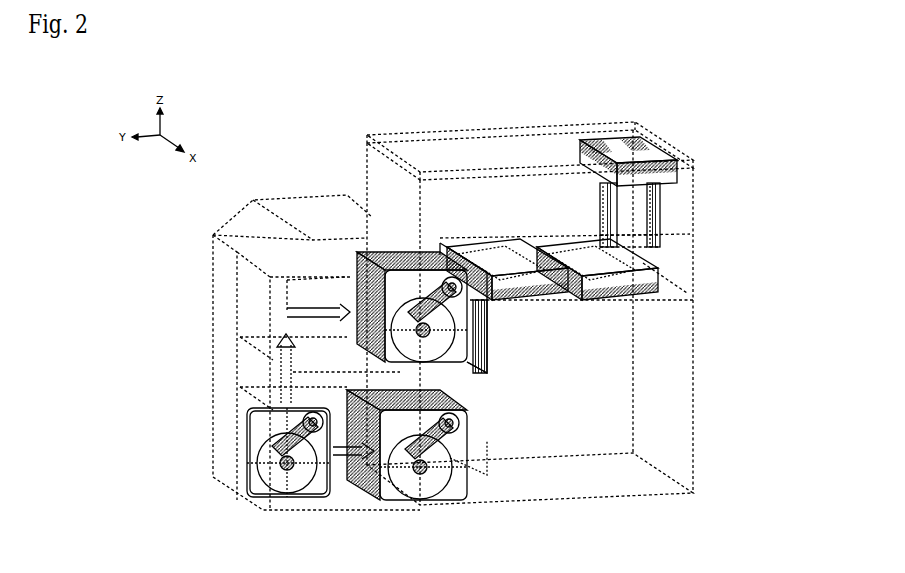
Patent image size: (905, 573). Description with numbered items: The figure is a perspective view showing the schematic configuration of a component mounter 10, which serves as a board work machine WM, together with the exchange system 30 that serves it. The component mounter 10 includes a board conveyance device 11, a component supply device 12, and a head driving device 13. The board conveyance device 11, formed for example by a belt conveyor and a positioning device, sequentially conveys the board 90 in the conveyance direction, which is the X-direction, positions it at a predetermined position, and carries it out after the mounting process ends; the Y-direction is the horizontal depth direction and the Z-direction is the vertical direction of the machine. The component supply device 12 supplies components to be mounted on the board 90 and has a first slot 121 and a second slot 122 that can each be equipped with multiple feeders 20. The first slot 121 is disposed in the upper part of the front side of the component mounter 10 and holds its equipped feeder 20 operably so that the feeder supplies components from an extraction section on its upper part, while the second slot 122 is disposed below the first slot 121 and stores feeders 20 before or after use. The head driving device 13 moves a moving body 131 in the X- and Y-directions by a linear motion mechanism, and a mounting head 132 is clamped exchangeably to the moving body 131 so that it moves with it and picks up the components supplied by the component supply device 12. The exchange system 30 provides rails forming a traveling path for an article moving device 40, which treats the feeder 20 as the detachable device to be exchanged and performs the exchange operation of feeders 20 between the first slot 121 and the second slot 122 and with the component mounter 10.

The component mounter 10 is at (478, 121).
The board conveyance device 11 is at (499, 228).
The component supply device 12 is at (410, 238).
The head driving device 13 is at (673, 162).
The moving body 131 is at (663, 208).
The mounting head 132 is at (653, 237).
The feeder 20 is at (407, 242).
The exchange system 30 is at (172, 226).
The article moving device 40 is at (198, 285).
The board 90 is at (477, 233).
The first slot 121 is at (487, 363).
The second slot 122 is at (470, 448).